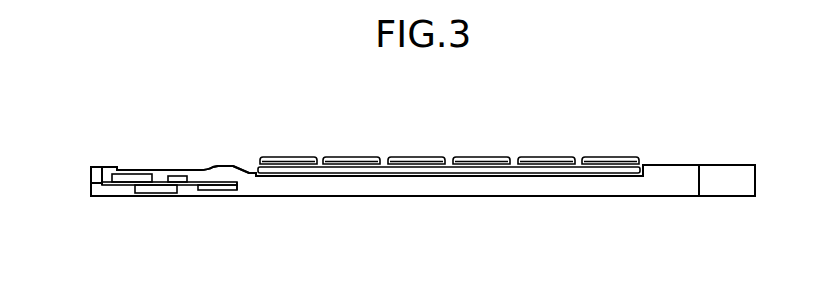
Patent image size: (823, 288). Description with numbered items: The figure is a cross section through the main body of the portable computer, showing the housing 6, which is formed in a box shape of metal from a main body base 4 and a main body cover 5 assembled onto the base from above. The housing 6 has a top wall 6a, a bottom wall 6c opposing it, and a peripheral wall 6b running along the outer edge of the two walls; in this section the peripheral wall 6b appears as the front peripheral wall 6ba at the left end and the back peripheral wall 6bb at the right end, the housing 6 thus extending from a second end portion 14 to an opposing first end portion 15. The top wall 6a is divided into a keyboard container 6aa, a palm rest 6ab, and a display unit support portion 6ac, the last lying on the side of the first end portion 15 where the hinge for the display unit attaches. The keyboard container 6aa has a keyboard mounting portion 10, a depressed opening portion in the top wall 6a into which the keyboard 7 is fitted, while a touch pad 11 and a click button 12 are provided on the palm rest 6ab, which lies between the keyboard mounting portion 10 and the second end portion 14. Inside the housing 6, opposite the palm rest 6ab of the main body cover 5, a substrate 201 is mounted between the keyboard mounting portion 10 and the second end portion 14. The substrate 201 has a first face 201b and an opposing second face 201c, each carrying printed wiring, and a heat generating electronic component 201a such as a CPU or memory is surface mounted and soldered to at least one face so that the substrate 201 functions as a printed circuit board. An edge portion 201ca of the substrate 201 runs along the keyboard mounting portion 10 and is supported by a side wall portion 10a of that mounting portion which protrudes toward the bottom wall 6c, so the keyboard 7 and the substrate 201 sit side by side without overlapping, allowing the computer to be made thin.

The housing 6 is at (741, 157).
The top wall 6a is at (219, 166).
The palm rest 6ab is at (105, 170).
The keyboard container 6aa is at (249, 172).
The display unit support portion 6ac is at (683, 165).
The peripheral wall 6b is at (90, 180).
The front peripheral wall 6ba is at (90, 168).
The back peripheral wall 6bb is at (747, 178).
The bottom wall 6c is at (353, 197).
The first end portion 15 is at (757, 170).
The main body cover 5 is at (648, 173).
The main body base 4 is at (672, 197).
The keyboard mounting portion 10 is at (618, 177).
The side wall portion 10a is at (253, 177).
The second end portion 14 is at (90, 192).
The touch pad 11 is at (202, 170).
The click button 12 is at (129, 170).
The keyboard 7 is at (638, 165).
The substrate 201 is at (90, 185).
The second face 201c is at (107, 174).
The first face 201b is at (122, 196).
The electronic component 201a is at (208, 196).
The edge portion 201ca is at (238, 187).